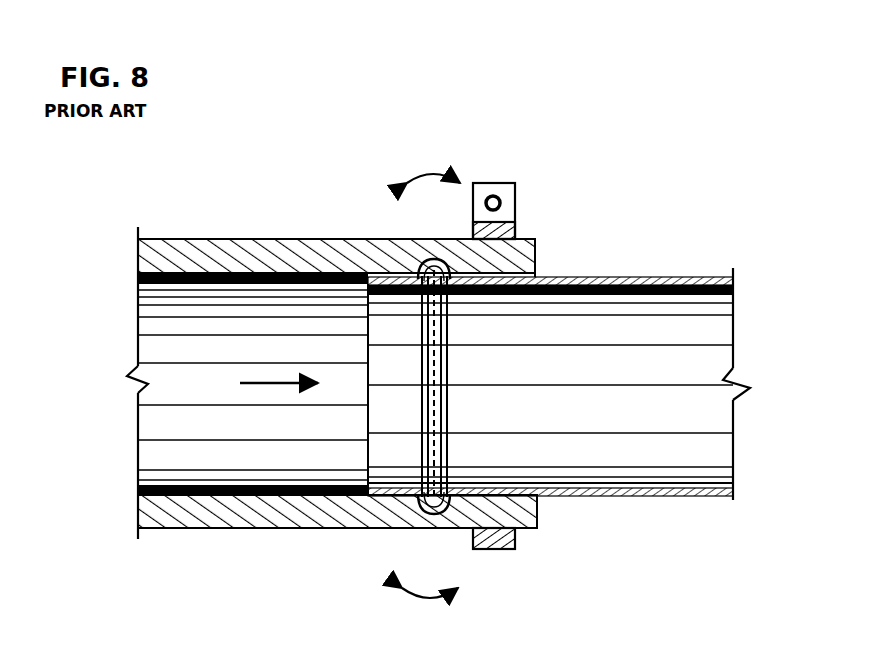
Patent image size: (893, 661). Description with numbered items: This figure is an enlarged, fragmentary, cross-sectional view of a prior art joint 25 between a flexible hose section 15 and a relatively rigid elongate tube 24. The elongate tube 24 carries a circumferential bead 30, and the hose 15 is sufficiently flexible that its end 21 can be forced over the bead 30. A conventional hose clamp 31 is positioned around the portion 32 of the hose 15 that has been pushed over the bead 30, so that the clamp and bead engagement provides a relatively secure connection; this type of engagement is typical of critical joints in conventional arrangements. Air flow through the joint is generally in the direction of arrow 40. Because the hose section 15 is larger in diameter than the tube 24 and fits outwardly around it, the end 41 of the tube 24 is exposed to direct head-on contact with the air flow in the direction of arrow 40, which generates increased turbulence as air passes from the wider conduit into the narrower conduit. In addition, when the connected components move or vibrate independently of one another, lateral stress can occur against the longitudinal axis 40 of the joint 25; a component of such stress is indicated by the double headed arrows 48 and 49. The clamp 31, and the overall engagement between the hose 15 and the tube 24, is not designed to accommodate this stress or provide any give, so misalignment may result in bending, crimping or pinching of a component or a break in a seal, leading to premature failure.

The flexible hose section 15 is at (338, 240).
The end of hose 21 is at (535, 254).
The elongate tube 24 is at (625, 278).
The joint 25 is at (467, 160).
The circumferential bead 30 is at (445, 467).
The hose clamp 31 is at (517, 203).
The portion of hose 32 is at (523, 532).
The arrow indicating direction of air flow 40 is at (263, 384).
The end of tube section 41 is at (363, 287).
The double headed arrow 48 is at (433, 177).
The double headed arrow 49 is at (430, 595).